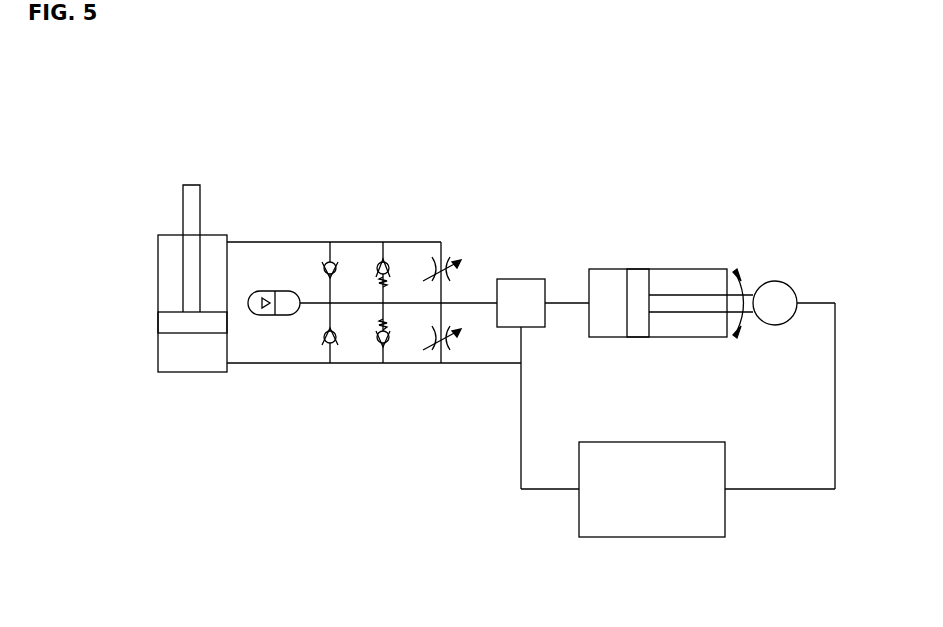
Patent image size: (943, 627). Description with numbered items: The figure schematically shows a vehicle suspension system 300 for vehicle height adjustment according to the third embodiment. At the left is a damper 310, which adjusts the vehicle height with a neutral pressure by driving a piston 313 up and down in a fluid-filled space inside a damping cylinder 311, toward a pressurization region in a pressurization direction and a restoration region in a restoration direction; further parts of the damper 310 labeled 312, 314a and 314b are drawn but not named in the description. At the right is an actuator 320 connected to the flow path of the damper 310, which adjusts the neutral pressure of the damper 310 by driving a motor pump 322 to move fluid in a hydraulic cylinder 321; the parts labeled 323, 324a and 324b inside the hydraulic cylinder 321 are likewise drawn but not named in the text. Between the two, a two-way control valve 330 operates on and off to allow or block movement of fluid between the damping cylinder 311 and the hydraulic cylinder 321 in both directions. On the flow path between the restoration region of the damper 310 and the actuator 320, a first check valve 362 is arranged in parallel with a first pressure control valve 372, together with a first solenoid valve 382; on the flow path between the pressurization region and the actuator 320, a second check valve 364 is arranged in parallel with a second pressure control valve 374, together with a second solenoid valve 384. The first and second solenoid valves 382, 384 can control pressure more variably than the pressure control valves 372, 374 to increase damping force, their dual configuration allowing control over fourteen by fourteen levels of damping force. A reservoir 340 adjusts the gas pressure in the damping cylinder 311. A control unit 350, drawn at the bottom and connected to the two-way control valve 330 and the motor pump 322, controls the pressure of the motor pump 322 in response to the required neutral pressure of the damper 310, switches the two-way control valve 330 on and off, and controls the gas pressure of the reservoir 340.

The vehicle suspension system 300 is at (808, 99).
The damper 310 is at (163, 172).
The damping cylinder 311 is at (158, 250).
The piston rod 312 is at (193, 210).
The piston 313 is at (170, 324).
The first chamber 314a is at (175, 355).
The second chamber 314b is at (175, 293).
The actuator 320 is at (766, 248).
The hydraulic cylinder 321 is at (677, 268).
The motor pump 322 is at (793, 288).
The piston 323 is at (637, 285).
The first chamber 324a is at (605, 282).
The second chamber 324b is at (703, 280).
The two-way control valve 330 is at (521, 279).
The reservoir 340 is at (266, 318).
The control unit 350 is at (650, 537).
The first check valve 362 is at (323, 268).
The second check valve 364 is at (323, 345).
The first pressure control valve 372 is at (392, 258).
The second pressure control valve 374 is at (390, 348).
The first solenoid valve 382 is at (448, 258).
The second solenoid valve 384 is at (449, 348).